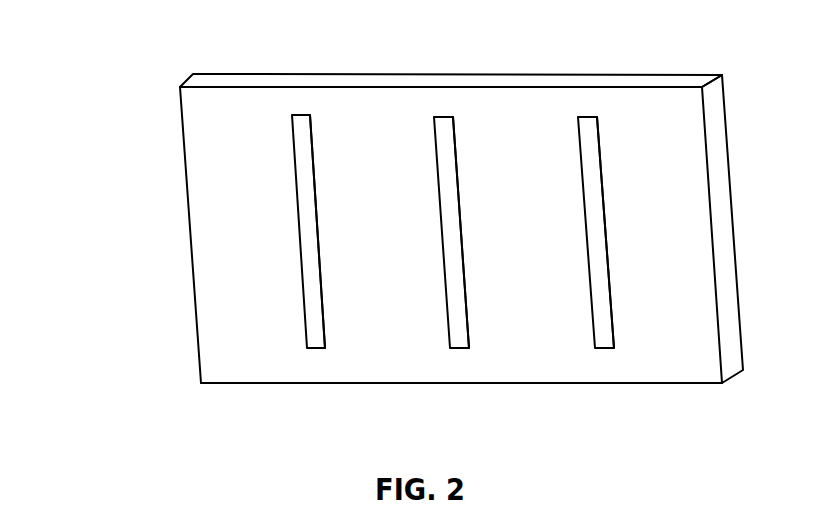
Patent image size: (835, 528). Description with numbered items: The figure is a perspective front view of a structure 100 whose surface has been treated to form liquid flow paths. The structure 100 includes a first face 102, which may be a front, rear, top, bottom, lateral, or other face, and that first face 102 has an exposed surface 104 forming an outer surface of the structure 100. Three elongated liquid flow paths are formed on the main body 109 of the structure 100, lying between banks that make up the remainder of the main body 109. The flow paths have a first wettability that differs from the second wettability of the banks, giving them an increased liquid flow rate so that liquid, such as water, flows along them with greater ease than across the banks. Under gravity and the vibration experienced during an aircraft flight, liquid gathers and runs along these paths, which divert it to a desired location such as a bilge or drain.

The structure 100 is at (116, 104).
The first face 102 is at (218, 262).
The exposed surface 104 is at (698, 240).
The main body 109 is at (217, 333).